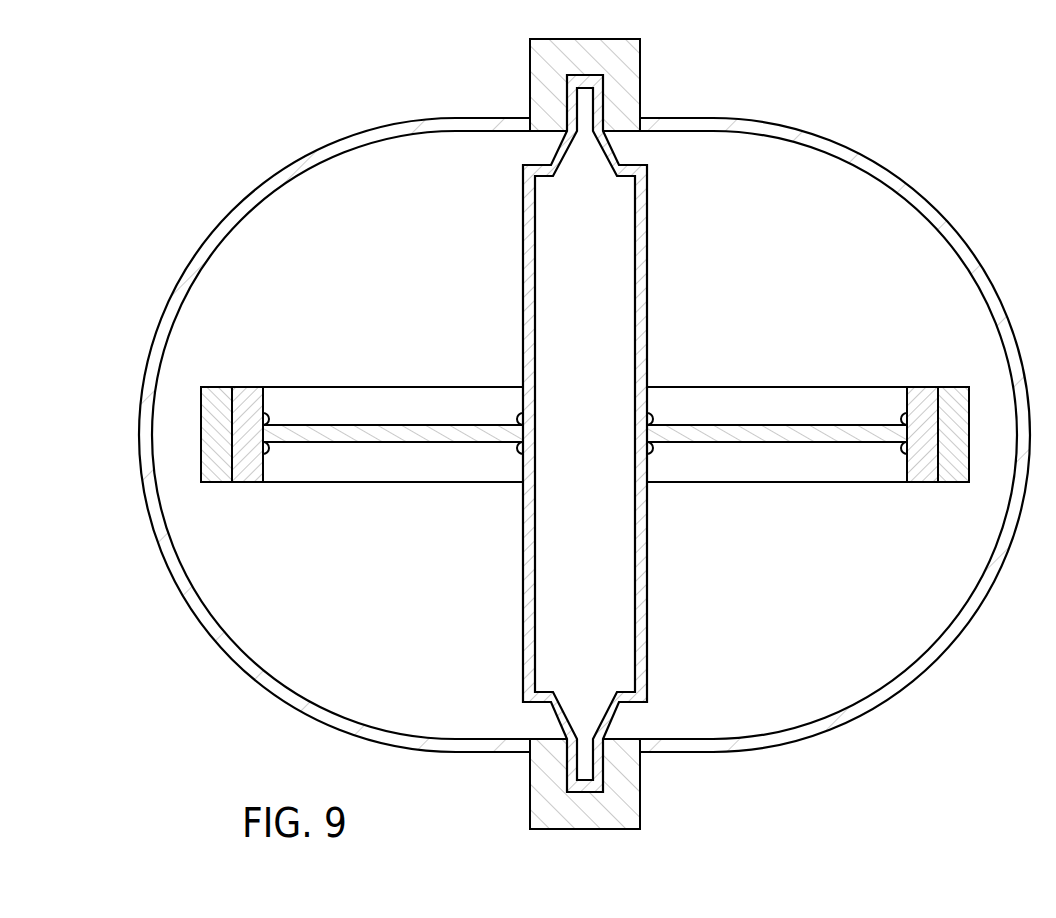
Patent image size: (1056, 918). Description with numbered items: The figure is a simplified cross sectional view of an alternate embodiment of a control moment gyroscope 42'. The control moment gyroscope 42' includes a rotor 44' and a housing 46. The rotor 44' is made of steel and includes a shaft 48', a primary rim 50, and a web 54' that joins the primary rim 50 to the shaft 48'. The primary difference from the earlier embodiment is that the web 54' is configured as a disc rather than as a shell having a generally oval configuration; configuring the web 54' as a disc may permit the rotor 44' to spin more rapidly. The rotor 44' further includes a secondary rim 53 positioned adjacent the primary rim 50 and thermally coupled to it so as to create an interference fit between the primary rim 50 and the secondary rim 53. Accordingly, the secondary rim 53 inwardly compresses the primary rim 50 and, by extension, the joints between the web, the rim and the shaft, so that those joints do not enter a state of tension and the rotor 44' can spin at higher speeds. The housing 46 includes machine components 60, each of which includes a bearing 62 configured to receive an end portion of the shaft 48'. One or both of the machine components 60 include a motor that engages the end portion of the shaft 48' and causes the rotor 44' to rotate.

The control moment gyroscope 42' is at (584, 444).
The rotor 44' is at (585, 422).
The housing 46 is at (939, 206).
The shaft 48' is at (554, 422).
The primary rim 50 is at (250, 387).
The secondary rim 53 is at (211, 387).
The web 54' is at (585, 434).
The machine component 60 is at (641, 67).
The bearing 62 is at (566, 83).